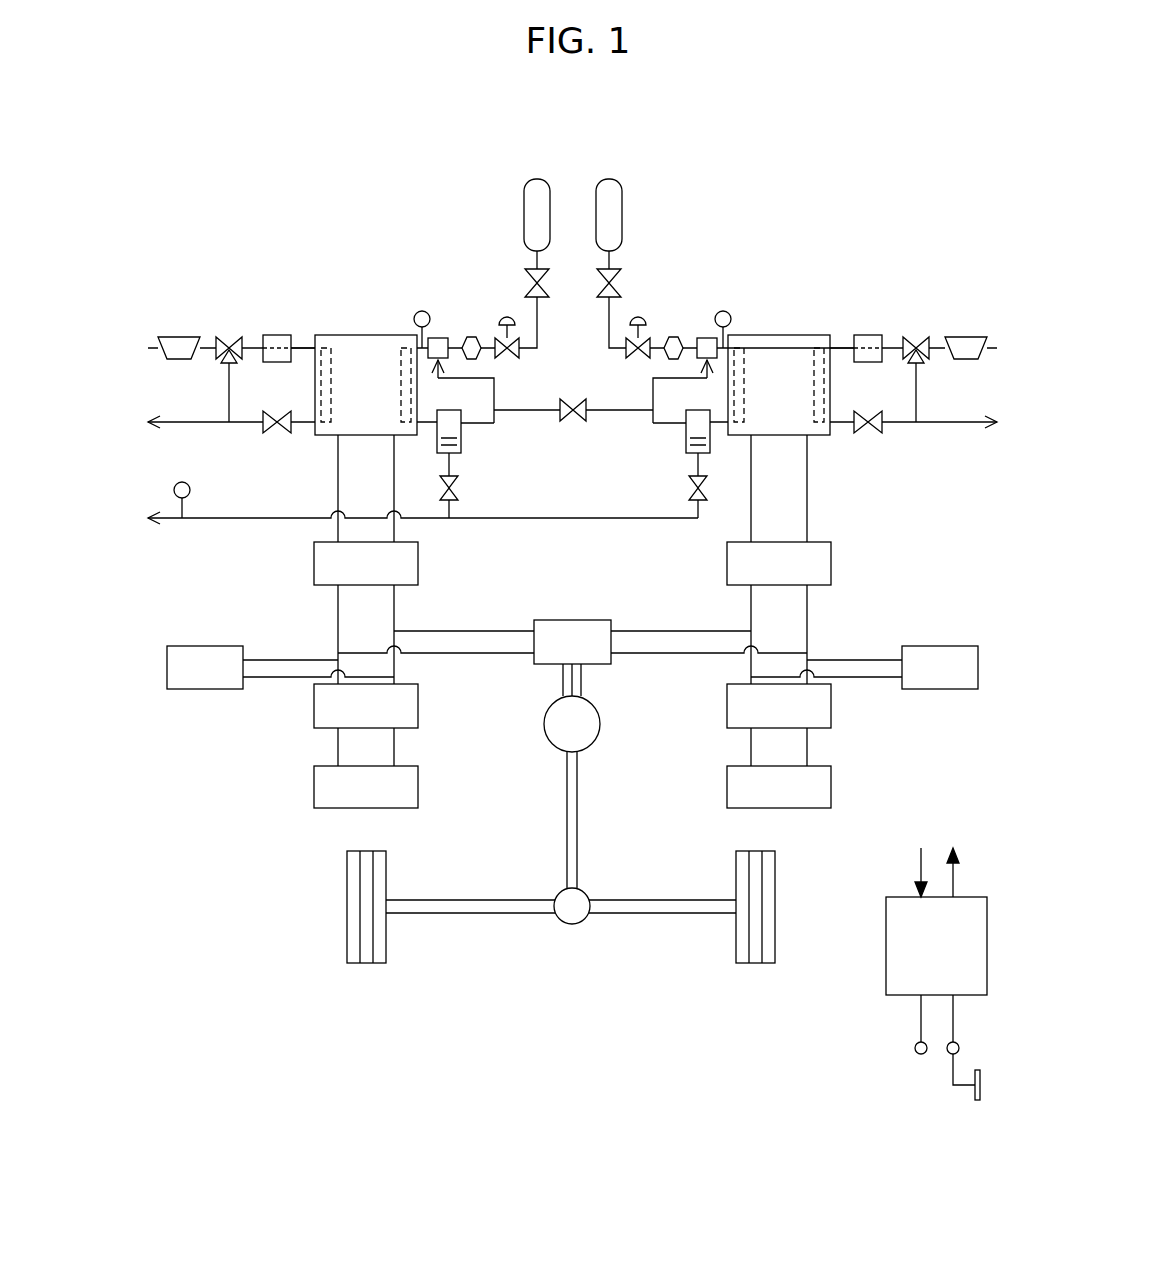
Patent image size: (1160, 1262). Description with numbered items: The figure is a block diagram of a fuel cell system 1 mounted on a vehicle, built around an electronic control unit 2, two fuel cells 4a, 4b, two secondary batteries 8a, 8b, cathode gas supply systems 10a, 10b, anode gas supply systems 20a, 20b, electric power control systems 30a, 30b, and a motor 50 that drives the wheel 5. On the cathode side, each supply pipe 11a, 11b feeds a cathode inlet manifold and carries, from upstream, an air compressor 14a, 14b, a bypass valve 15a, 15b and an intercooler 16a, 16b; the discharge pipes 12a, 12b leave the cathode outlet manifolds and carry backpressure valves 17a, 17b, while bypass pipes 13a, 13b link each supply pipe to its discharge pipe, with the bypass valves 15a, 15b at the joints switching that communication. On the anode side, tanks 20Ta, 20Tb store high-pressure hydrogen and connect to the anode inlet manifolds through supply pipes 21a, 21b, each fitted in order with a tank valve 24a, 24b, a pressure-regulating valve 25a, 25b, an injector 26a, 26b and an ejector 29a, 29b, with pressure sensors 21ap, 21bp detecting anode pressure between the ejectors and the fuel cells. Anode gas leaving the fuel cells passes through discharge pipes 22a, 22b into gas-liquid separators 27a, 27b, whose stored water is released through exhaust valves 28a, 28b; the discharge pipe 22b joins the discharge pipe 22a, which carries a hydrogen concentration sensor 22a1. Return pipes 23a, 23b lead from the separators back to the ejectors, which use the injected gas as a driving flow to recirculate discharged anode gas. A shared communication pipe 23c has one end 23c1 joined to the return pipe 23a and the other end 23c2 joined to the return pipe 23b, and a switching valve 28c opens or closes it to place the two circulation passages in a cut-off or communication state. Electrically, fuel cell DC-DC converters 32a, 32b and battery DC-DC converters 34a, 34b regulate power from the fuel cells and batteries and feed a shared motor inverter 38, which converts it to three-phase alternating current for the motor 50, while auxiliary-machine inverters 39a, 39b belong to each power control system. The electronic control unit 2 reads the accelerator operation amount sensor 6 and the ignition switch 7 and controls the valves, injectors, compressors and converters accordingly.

The fuel cell system 1 is at (908, 200).
The electronic control unit 2 is at (886, 952).
The fuel cell 4a is at (365, 335).
The fuel cell 4b is at (785, 335).
The wheel 5 is at (347, 940).
The accelerator operation amount sensor 6 is at (960, 1048).
The ignition switch 7 is at (915, 1048).
The secondary battery 8a is at (314, 791).
The secondary battery 8b is at (831, 791).
The cathode gas supply system 10a is at (232, 297).
The cathode gas supply system 10b is at (957, 285).
The supply pipe 11a is at (304, 352).
The supply pipe 11b is at (840, 352).
The discharge pipe 12a is at (243, 422).
The discharge pipe 12b is at (897, 422).
The bypass pipe 13a is at (229, 402).
The bypass pipe 13b is at (916, 402).
The air compressor 14a is at (185, 337).
The air compressor 14b is at (965, 337).
The bypass valve 15a is at (226, 355).
The bypass valve 15b is at (920, 355).
The intercooler 16a is at (280, 335).
The intercooler 16b is at (866, 335).
The backpressure valve 17a is at (270, 412).
The backpressure valve 17b is at (870, 412).
The anode gas supply system 20a is at (432, 205).
The anode gas supply system 20b is at (698, 238).
The tank 20Ta is at (533, 179).
The tank 20Tb is at (612, 179).
The supply pipe 21a is at (537, 350).
The supply pipe 21b is at (609, 333).
The pressure sensor 21ap is at (420, 311).
The pressure sensor 21bp is at (725, 311).
The discharge pipe 22a is at (278, 518).
The hydrogen concentration sensor 22a1 is at (182, 482).
The discharge pipe 22b is at (578, 519).
The return pipe 23a is at (476, 425).
The return pipe 23b is at (670, 425).
The communication pipe 23c is at (610, 412).
The one end of communication pipe 23c1 is at (494, 415).
The other end of communication pipe 23c2 is at (653, 395).
The tank valve 24a is at (525, 283).
The tank valve 24b is at (620, 283).
The pressure-regulating valve 25a is at (507, 320).
The pressure-regulating valve 25b is at (638, 320).
The injector 26a is at (471, 337).
The injector 26b is at (676, 337).
The gas-liquid separator 27a is at (437, 440).
The gas-liquid separator 27b is at (710, 440).
The exhaust valve 28a is at (458, 490).
The exhaust valve 28b is at (687, 490).
The switching valve 28c is at (573, 422).
The ejector 29a is at (438, 337).
The ejector 29b is at (707, 337).
The electric power control system 30a is at (207, 752).
The electric power control system 30b is at (947, 752).
The fuel cell DC-DC converter 32a is at (314, 566).
The fuel cell DC-DC converter 32b is at (831, 566).
The battery DC-DC converter 34a is at (314, 710).
The battery DC-DC converter 34b is at (831, 710).
The motor inverter 38 is at (600, 620).
The auxiliary-machine inverter 39a is at (205, 646).
The auxiliary-machine inverter 39b is at (935, 646).
The motor 50 is at (600, 735).